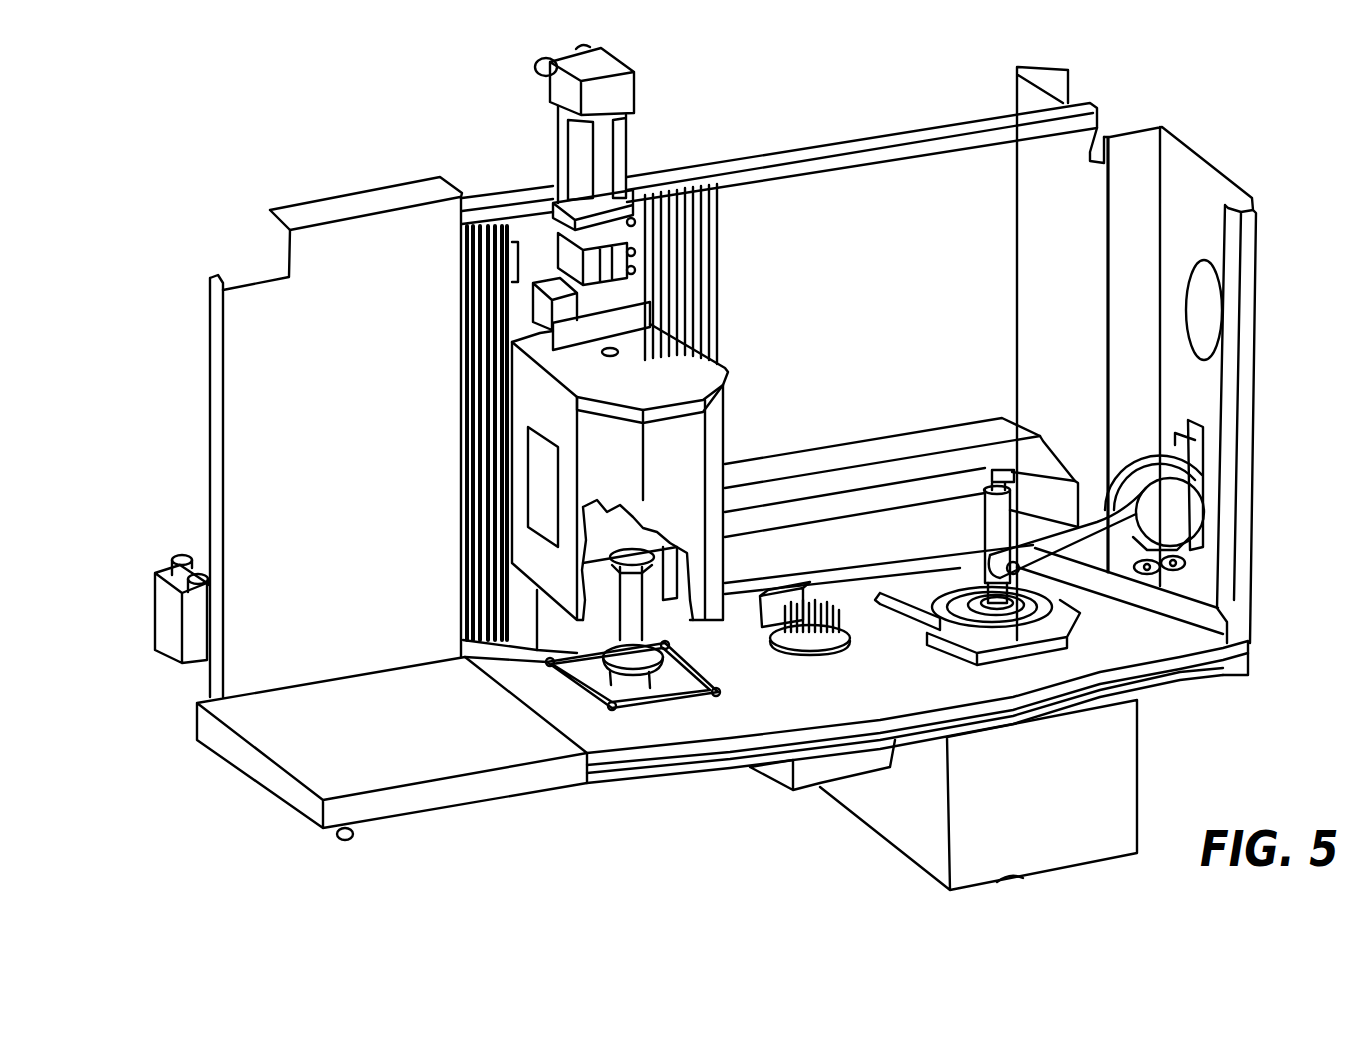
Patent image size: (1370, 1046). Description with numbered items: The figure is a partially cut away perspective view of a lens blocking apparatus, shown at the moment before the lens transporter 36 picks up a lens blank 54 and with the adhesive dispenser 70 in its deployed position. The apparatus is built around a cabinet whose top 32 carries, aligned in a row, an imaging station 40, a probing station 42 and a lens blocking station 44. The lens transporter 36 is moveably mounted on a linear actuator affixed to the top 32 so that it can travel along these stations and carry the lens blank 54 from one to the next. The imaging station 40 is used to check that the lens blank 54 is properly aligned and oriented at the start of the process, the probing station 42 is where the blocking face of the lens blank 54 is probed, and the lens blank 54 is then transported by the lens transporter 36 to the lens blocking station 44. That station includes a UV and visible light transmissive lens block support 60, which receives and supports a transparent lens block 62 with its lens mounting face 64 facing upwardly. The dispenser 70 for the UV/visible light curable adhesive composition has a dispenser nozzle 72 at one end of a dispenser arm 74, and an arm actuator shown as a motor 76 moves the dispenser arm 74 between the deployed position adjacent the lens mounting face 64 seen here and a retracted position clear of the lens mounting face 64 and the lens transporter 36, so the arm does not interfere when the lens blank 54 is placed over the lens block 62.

The top 32 is at (740, 741).
The lens transporter 36 is at (523, 478).
The imaging station 40 is at (638, 688).
The probing station 42 is at (826, 662).
The lens blocking station 44 is at (1037, 660).
The lens blank 54 is at (660, 655).
The lens block support 60 is at (1010, 648).
The lens block 62 is at (947, 650).
The lens mounting face 64 is at (977, 600).
The dispenser 70 is at (1110, 580).
The dispenser nozzle 72 is at (930, 643).
The dispenser arm 74 is at (1090, 533).
The motor 76 is at (1155, 455).